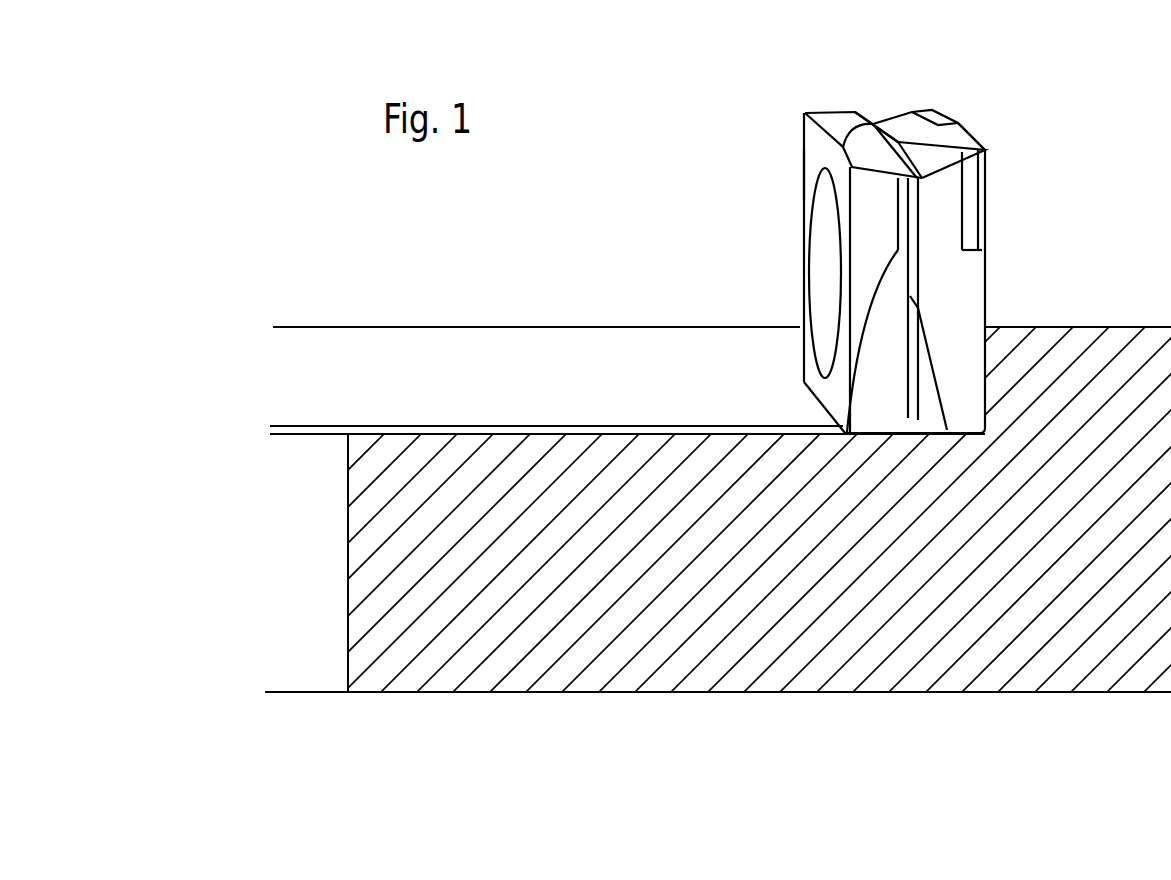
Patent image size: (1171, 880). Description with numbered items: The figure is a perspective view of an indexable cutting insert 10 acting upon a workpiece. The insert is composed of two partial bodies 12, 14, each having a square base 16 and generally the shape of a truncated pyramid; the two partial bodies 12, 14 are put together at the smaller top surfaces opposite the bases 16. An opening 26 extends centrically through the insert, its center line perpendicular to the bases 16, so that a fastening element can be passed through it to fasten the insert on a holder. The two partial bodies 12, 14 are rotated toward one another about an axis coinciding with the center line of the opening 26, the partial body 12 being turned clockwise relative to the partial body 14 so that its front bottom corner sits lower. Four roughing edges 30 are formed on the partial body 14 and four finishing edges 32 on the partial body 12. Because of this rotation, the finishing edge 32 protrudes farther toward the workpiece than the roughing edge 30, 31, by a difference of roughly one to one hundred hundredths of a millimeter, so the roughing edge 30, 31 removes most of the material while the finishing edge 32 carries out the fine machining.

The indexable cutting insert 10 is at (891, 84).
The partial body 12 is at (833, 122).
The partial body 14 is at (960, 132).
The square base 16 is at (817, 158).
The opening 26 is at (820, 273).
The roughing edge 30 is at (967, 125).
The roughing edge 31 is at (987, 433).
The finishing edge 32 is at (810, 113).